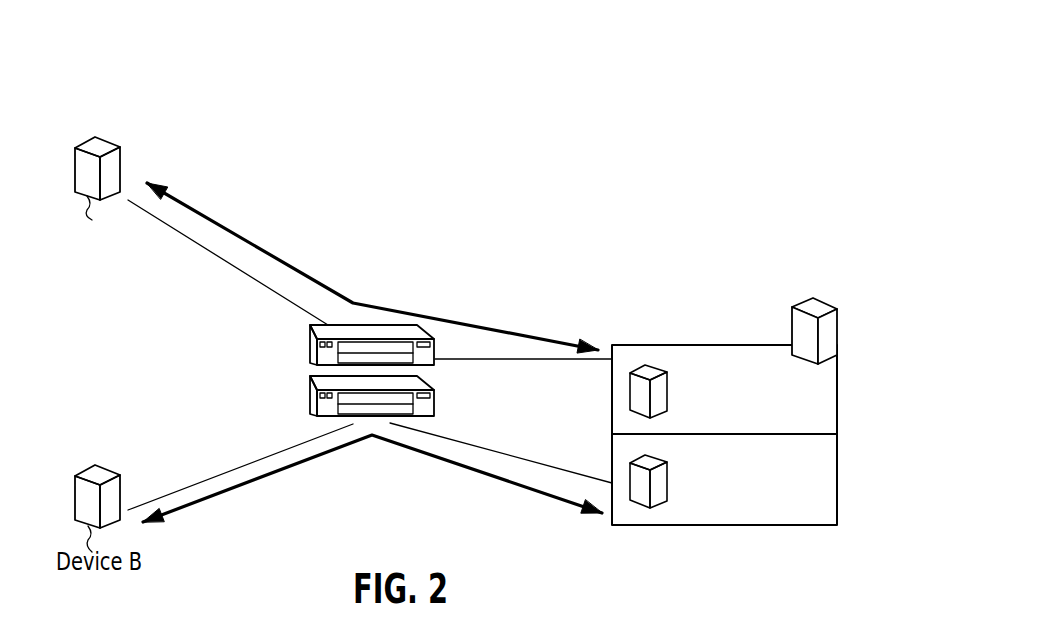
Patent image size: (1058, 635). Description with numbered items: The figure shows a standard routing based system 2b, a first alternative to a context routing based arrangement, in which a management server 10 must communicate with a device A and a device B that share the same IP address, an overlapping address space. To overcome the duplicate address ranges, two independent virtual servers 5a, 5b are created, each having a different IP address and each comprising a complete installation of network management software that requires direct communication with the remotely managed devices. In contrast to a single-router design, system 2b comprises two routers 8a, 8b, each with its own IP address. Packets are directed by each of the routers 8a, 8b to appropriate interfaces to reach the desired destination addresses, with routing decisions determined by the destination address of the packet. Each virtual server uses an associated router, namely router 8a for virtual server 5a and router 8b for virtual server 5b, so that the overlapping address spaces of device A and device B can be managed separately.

The standard routing based system 2b is at (88, 110).
The router 8a is at (310, 340).
The router 8b is at (310, 391).
The management server 10 is at (813, 298).
The virtual server 5a is at (667, 390).
The virtual server 5b is at (667, 480).